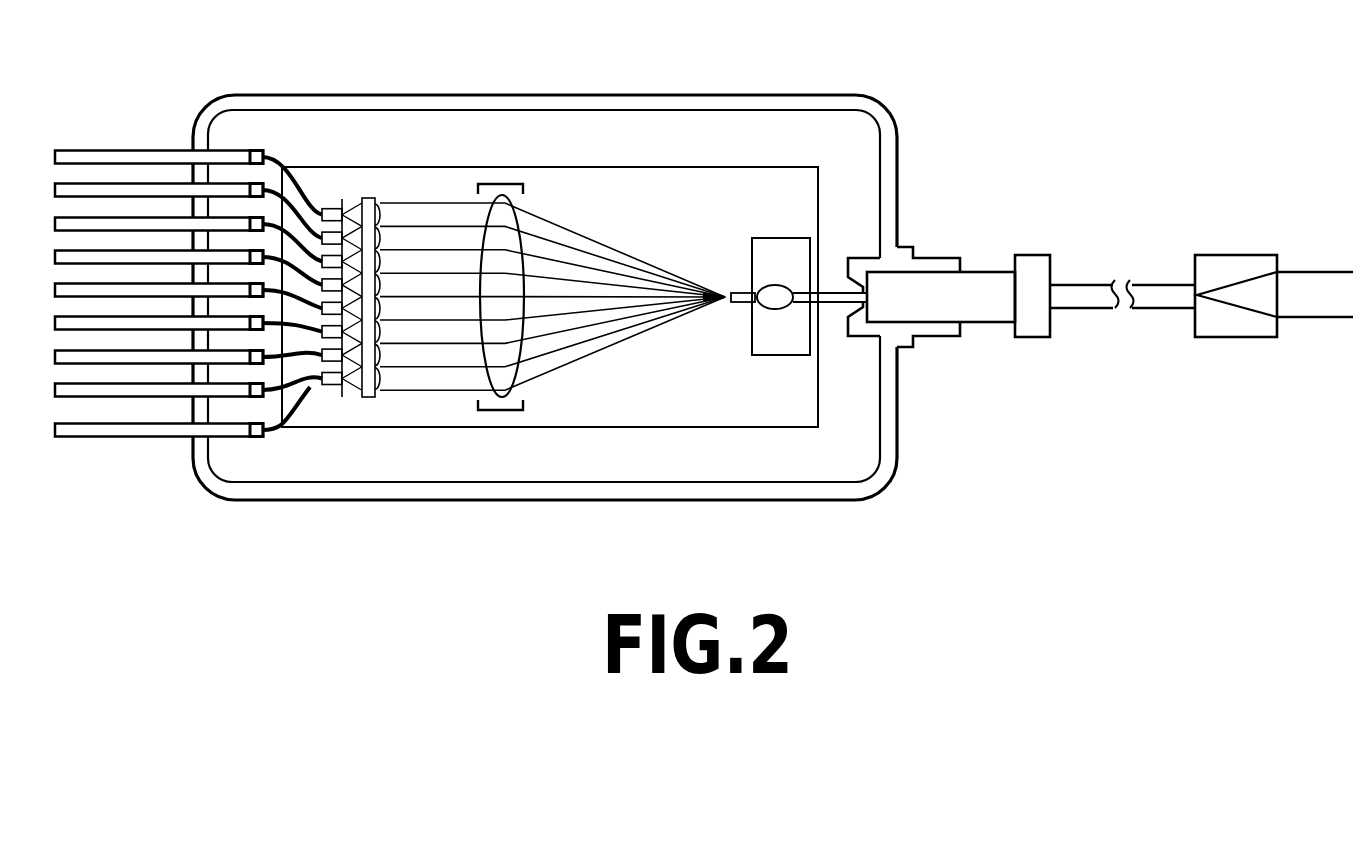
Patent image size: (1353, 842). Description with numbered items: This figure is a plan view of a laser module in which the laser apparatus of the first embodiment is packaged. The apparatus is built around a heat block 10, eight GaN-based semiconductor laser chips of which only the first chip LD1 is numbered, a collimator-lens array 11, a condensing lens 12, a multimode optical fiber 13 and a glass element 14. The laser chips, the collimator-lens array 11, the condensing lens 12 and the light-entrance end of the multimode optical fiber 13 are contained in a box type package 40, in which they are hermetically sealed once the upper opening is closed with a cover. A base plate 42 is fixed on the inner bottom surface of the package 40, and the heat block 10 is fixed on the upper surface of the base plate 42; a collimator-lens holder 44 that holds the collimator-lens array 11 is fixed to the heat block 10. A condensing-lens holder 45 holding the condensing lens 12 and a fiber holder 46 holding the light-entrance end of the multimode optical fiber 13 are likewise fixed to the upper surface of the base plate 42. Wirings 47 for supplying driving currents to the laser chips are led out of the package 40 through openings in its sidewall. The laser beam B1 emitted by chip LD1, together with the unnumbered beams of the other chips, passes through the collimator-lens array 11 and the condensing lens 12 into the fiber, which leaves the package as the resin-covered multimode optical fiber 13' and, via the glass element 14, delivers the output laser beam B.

The wirings 47 is at (128, 98).
The GaN-based semiconductor laser chip LD1 is at (332, 213).
The laser beam B1 is at (413, 212).
The condensing lens 12 is at (502, 182).
The package 40 is at (673, 93).
The base plate 42 is at (752, 182).
The multimode optical fiber 13 is at (941, 250).
The resin-covered multimode optical fiber 13' is at (1122, 230).
The glass element 14 is at (1247, 265).
The laser beam B is at (1317, 280).
The heat block 10 is at (295, 415).
The collimator-lens holder 44 is at (353, 394).
The collimator-lens array 11 is at (368, 398).
The condensing-lens holder 45 is at (505, 412).
The fiber holder 46 is at (783, 342).